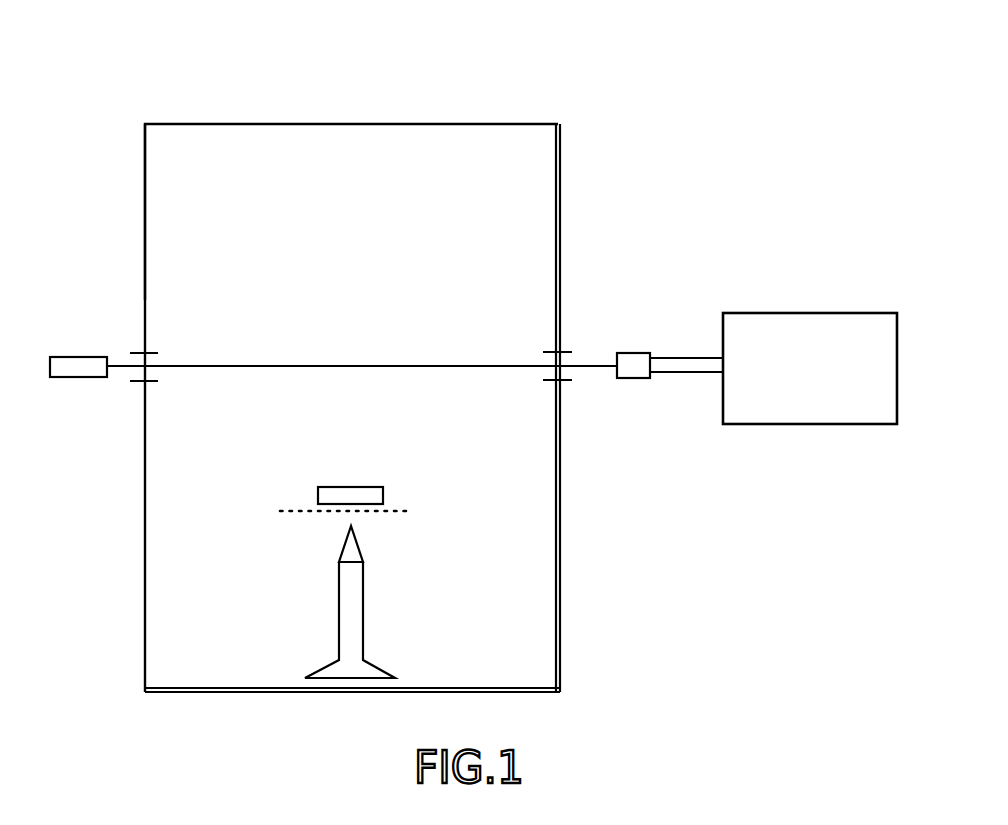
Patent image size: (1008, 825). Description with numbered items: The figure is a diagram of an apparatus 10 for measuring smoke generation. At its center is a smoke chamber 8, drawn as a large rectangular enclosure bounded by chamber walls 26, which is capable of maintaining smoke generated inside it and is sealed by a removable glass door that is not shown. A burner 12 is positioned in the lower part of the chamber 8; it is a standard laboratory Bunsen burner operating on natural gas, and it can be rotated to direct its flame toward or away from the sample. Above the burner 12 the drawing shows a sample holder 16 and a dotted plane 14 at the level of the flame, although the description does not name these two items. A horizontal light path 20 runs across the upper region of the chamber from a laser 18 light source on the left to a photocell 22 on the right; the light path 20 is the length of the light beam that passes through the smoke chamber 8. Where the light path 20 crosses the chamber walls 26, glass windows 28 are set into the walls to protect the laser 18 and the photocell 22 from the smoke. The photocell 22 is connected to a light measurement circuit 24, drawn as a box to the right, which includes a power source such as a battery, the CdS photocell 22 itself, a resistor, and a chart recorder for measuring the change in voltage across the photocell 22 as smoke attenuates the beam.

The smoke chamber 8 is at (145, 167).
The apparatus for measuring smoke generation 10 is at (650, 102).
The burner 12 is at (363, 600).
The plane / flame region 14 is at (420, 510).
The sample holder 16 is at (355, 487).
The laser 18 is at (80, 357).
The light path 20 is at (362, 366).
The photocell 22 is at (633, 352).
The light measurement circuit 24 is at (828, 379).
The chamber walls 26 is at (560, 204).
The glass windows 28 is at (570, 359).